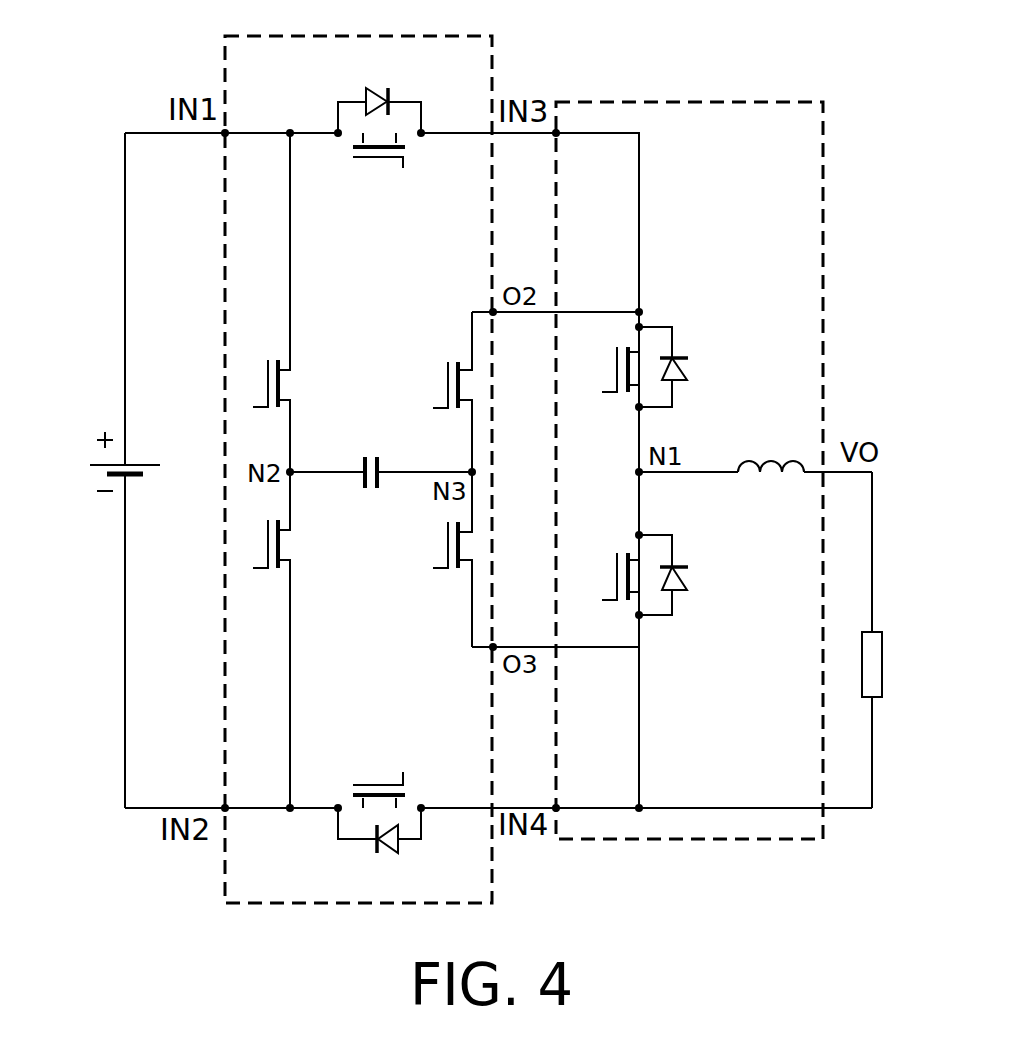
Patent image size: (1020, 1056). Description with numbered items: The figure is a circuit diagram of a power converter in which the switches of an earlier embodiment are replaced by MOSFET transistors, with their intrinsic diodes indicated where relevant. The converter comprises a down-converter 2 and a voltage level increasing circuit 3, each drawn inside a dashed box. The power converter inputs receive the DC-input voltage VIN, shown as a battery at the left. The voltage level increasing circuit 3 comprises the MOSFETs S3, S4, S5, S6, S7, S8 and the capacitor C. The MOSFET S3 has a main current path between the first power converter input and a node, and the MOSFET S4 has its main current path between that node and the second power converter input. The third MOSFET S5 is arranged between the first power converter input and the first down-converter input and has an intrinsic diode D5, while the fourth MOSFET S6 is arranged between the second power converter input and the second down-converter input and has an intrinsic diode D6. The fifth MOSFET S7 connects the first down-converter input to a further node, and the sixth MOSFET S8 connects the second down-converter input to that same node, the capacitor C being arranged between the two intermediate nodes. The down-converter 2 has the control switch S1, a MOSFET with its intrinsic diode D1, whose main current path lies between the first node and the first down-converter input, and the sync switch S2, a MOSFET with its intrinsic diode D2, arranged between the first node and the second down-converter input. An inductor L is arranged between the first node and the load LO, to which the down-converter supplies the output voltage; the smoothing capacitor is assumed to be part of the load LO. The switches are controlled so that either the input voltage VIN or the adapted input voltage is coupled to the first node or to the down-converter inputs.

The down-converter 2 is at (824, 158).
The voltage level increasing circuit 3 is at (226, 264).
The DC-input voltage VIN is at (93, 461).
The control switch S1 is at (601, 369).
The sync switch S2 is at (601, 576).
The MOSFET S3 is at (291, 383).
The MOSFET S4 is at (291, 544).
The third MOSFET S5 is at (379, 162).
The fourth MOSFET S6 is at (379, 779).
The fifth MOSFET S7 is at (431, 385).
The sixth MOSFET S8 is at (431, 545).
The intrinsic diode D1 is at (684, 367).
The intrinsic diode D2 is at (684, 575).
The intrinsic diode D5 is at (379, 94).
The intrinsic diode D6 is at (379, 849).
The capacitor C is at (381, 455).
The inductor L is at (755, 453).
The load LO is at (893, 664).